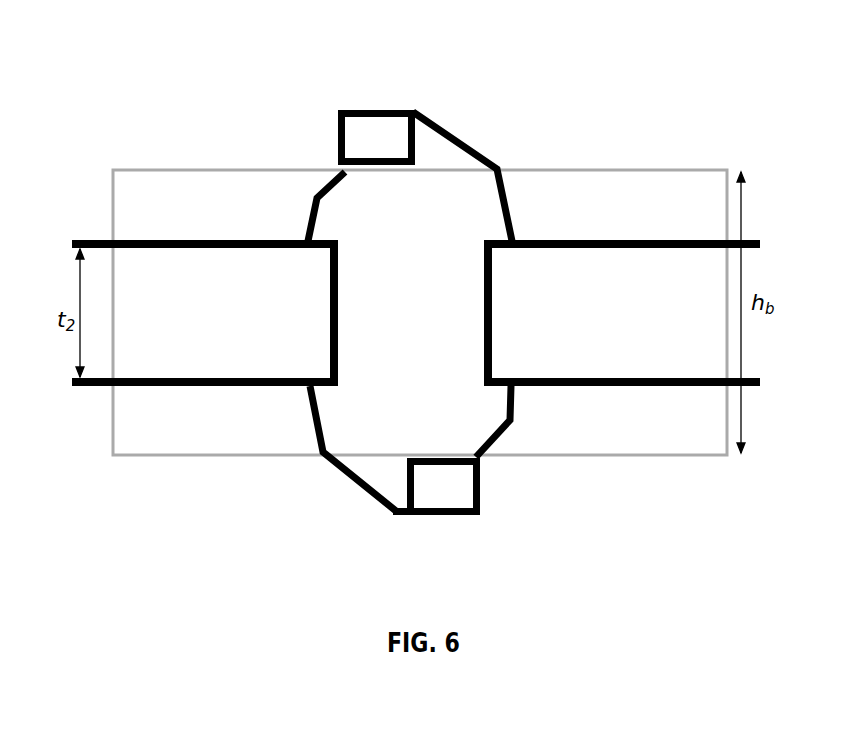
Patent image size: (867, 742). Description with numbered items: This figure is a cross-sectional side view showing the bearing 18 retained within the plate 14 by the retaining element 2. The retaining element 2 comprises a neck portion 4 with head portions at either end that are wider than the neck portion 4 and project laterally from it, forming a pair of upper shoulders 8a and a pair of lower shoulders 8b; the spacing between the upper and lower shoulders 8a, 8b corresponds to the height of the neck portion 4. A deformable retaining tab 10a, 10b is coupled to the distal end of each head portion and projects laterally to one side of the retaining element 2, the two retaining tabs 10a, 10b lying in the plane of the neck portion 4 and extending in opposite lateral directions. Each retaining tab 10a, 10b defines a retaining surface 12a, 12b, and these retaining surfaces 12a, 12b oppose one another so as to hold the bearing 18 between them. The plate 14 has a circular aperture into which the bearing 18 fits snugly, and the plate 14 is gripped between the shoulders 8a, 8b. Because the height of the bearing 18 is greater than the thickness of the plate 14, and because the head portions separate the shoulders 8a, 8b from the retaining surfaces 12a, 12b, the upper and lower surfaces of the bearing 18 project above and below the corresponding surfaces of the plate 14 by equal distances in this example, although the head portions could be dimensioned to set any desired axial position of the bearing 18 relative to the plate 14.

The retaining element 2 is at (487, 152).
The neck portion 4 is at (455, 316).
The upper shoulders 8a is at (337, 217).
The lower shoulders 8b is at (490, 402).
The retaining tab 10a is at (392, 137).
The retaining tab 10b is at (442, 488).
The retaining surface 12a is at (500, 247).
The retaining surface 12b is at (318, 380).
The plate 14 is at (100, 270).
The bearing 18 is at (252, 198).